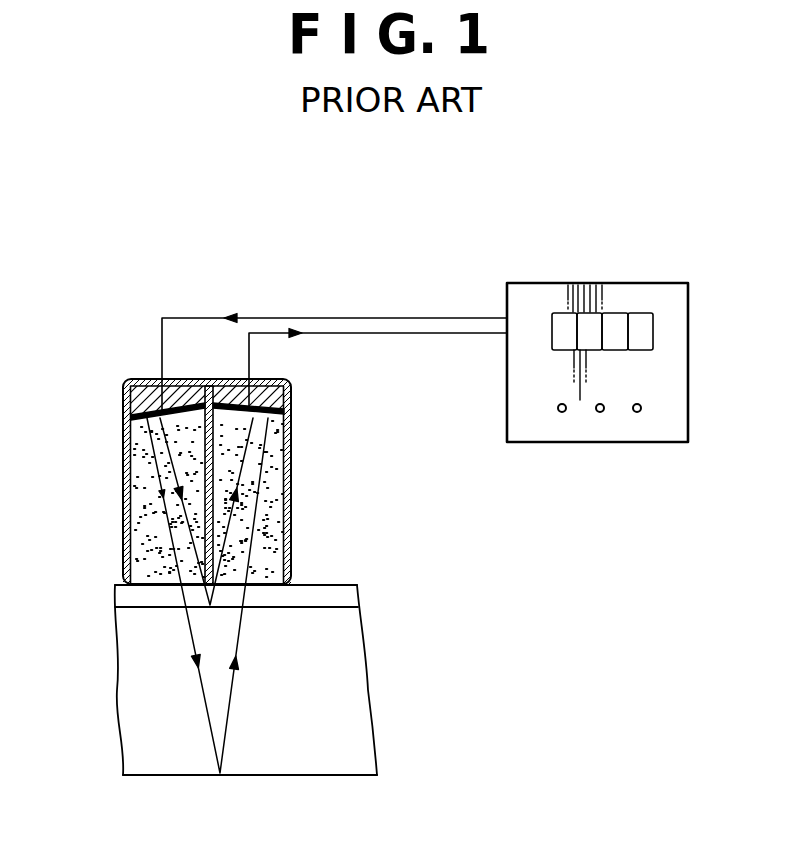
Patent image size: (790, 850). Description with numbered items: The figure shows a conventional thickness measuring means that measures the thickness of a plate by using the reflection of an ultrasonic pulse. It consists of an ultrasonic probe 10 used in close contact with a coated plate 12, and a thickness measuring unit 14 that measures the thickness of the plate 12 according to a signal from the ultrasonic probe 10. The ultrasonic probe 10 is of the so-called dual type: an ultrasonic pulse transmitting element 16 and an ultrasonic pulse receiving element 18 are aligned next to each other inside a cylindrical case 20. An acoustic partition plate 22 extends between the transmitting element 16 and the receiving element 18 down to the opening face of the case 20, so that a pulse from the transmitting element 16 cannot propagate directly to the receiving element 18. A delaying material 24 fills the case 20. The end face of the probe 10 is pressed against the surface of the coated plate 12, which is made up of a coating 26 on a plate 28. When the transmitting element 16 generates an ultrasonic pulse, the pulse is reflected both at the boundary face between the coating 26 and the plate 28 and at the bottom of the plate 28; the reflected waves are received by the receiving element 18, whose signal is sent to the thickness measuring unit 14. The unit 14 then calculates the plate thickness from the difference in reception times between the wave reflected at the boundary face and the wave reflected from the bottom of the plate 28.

The ultrasonic probe 10 is at (255, 574).
The coated plate 12 is at (287, 701).
The thickness measuring unit 14 is at (593, 446).
The ultrasonic pulse transmitting element 16 is at (125, 398).
The ultrasonic pulse receiving element 18 is at (291, 405).
The cylindrical case 20 is at (293, 530).
The acoustic partition plate 22 is at (202, 474).
The delaying material 24 is at (127, 538).
The coating 26 is at (338, 584).
The plate 28 is at (290, 757).